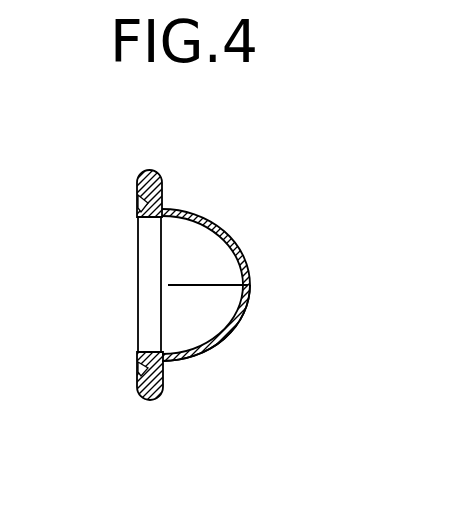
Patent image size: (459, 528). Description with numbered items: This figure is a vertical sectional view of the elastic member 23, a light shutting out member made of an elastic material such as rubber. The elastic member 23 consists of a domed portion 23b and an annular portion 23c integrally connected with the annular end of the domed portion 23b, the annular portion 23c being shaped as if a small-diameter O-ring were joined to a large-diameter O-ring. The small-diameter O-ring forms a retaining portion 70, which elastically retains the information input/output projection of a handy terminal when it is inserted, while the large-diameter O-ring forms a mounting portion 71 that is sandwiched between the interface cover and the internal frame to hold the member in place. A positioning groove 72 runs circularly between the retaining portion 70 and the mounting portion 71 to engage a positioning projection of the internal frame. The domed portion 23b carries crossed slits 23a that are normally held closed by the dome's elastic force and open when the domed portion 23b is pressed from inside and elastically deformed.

The elastic member 23 is at (215, 208).
The crossed slits 23a is at (249, 287).
The domed portion 23b is at (223, 341).
The annular portion 23c is at (157, 352).
The retaining portion 70 is at (140, 217).
The mounting portion 71 is at (143, 171).
The positioning groove 72 is at (162, 201).